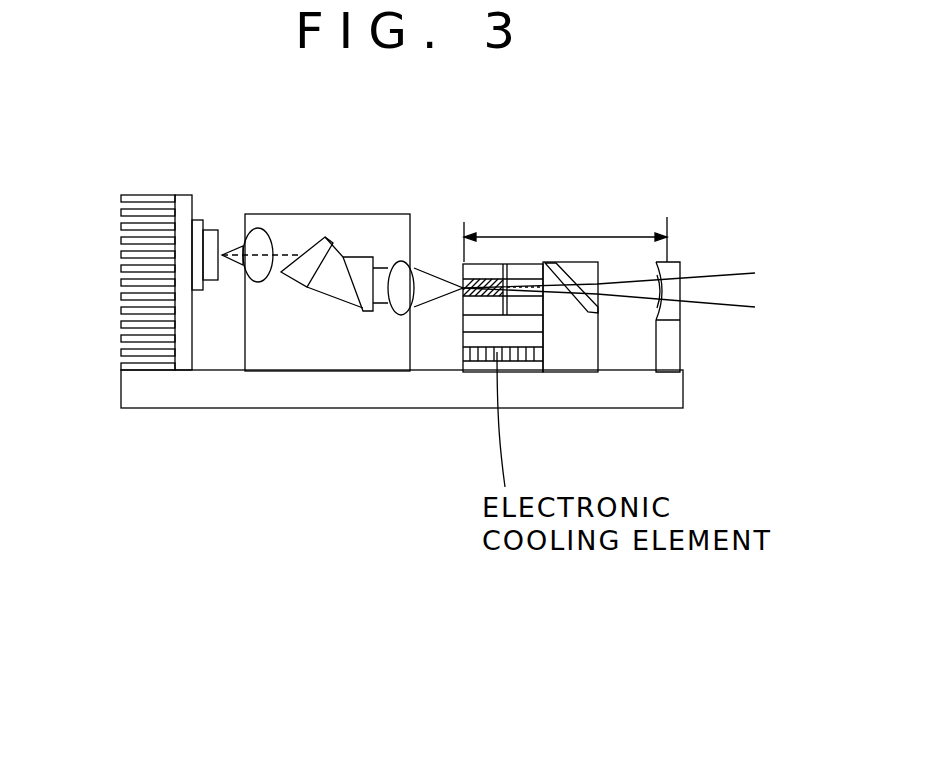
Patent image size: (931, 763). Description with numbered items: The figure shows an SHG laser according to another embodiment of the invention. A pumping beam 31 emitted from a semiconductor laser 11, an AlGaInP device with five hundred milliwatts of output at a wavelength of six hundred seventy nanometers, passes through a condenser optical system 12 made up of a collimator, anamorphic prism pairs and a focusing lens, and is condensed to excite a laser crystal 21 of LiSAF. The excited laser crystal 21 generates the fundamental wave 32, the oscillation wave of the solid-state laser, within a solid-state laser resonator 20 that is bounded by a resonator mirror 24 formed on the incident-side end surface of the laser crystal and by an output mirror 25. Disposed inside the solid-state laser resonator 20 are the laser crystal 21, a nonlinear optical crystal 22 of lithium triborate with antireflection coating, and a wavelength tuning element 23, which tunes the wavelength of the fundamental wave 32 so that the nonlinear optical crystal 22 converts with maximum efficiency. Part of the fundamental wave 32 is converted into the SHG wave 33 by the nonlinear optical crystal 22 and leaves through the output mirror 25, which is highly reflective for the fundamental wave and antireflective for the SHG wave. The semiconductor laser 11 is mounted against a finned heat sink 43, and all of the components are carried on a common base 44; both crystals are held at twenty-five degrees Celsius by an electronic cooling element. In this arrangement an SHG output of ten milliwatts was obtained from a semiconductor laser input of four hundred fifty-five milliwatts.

The semiconductor laser 11 is at (214, 228).
The condenser optical system 12 is at (385, 216).
The solid-state laser resonator 20 is at (580, 236).
The laser crystal 21 is at (494, 299).
The nonlinear optical crystal 22 is at (528, 298).
The wavelength tuning element 23 is at (576, 312).
The resonator mirror 24 is at (463, 291).
The output mirror 25 is at (652, 305).
The pumping beam 31 is at (427, 280).
The fundamental wave 32 is at (646, 272).
The SHG wave 33 is at (736, 288).
The heat sink 43 is at (143, 196).
The base 44 is at (281, 397).